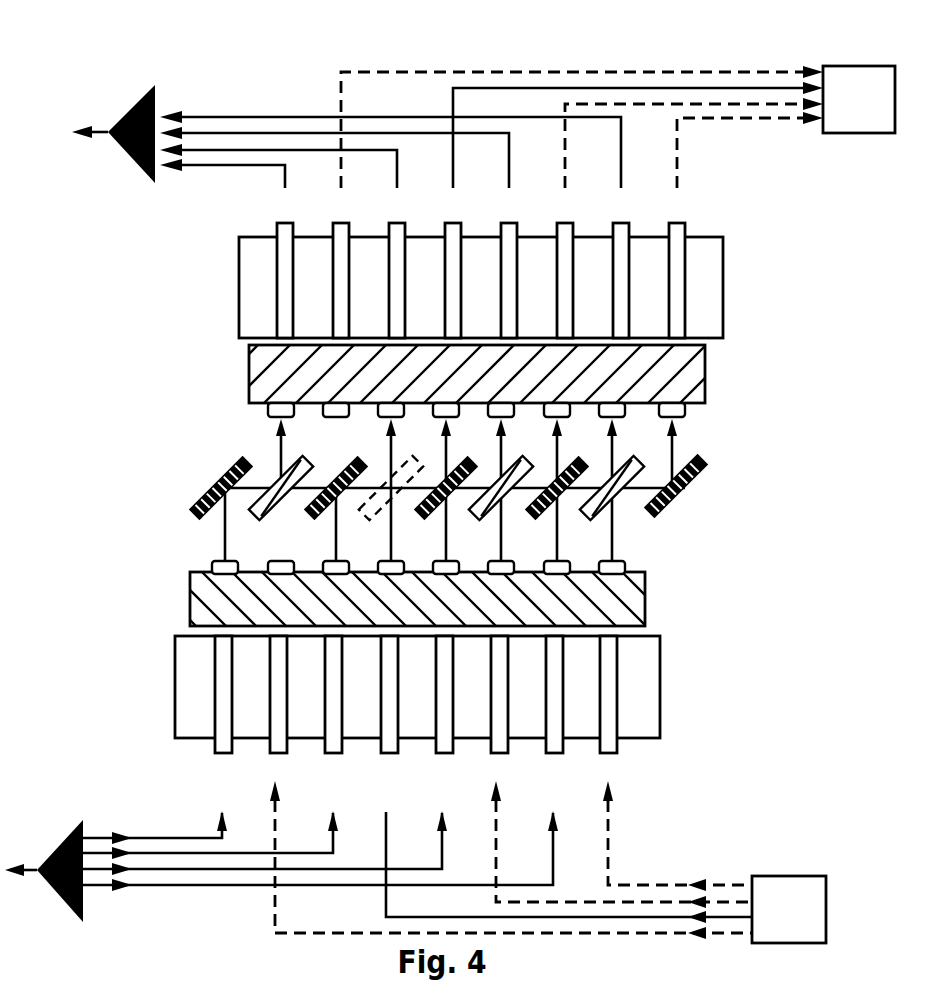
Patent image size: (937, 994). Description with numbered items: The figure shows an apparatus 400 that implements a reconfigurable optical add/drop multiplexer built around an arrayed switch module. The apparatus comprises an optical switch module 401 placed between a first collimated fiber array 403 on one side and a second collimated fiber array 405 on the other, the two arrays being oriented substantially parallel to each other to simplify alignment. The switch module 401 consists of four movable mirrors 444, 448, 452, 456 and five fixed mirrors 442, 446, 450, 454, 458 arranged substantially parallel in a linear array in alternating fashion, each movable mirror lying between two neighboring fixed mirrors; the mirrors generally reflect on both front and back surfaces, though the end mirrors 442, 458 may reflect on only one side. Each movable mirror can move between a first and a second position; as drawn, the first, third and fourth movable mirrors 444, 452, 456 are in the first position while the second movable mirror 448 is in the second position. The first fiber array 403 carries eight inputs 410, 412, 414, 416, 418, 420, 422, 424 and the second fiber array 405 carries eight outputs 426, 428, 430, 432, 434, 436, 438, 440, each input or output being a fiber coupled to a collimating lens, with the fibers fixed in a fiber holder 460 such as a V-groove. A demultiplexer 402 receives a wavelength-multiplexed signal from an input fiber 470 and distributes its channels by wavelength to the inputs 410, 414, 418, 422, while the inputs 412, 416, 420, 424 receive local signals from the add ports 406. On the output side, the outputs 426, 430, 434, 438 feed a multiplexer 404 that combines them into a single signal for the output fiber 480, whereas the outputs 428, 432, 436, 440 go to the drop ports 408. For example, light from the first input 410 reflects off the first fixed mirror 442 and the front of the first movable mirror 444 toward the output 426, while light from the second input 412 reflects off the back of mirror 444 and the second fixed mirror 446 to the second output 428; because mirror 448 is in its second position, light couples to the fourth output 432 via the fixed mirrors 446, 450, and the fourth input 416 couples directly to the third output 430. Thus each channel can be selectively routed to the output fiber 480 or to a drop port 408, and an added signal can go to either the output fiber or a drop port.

The apparatus 400 is at (106, 354).
The optical switch module 401 is at (712, 485).
The demultiplexer 402 is at (83, 905).
The first collimated fiber array 403 is at (674, 572).
The multiplexer 404 is at (140, 101).
The second collimated fiber array 405 is at (737, 238).
The add ports 406 is at (866, 66).
The drop ports 408 is at (790, 876).
The first input 410 is at (215, 714).
The second input 412 is at (270, 714).
The input 414 is at (325, 714).
The fourth input 416 is at (381, 714).
The fifth input 418 is at (436, 714).
The sixth input 420 is at (491, 714).
The input 422 is at (546, 714).
The input 424 is at (600, 714).
The first output 426 is at (277, 283).
The second output 428 is at (333, 252).
The third output 430 is at (389, 252).
The fourth output 432 is at (445, 252).
The fifth output 434 is at (501, 252).
The output 436 is at (557, 252).
The output 438 is at (613, 252).
The output 440 is at (669, 252).
The first fixed mirror 442 is at (210, 482).
The first movable mirror 444 is at (276, 482).
The second fixed mirror 446 is at (342, 472).
The second movable mirror 448 is at (395, 470).
The third fixed mirror 450 is at (444, 482).
The third movable mirror 452 is at (499, 486).
The fourth fixed mirror 454 is at (555, 486).
The fourth movable mirror 456 is at (618, 472).
The fifth fixed mirror 458 is at (701, 458).
The fiber holder 460 is at (249, 371).
The input fiber 470 is at (30, 868).
The output fiber 480 is at (97, 133).